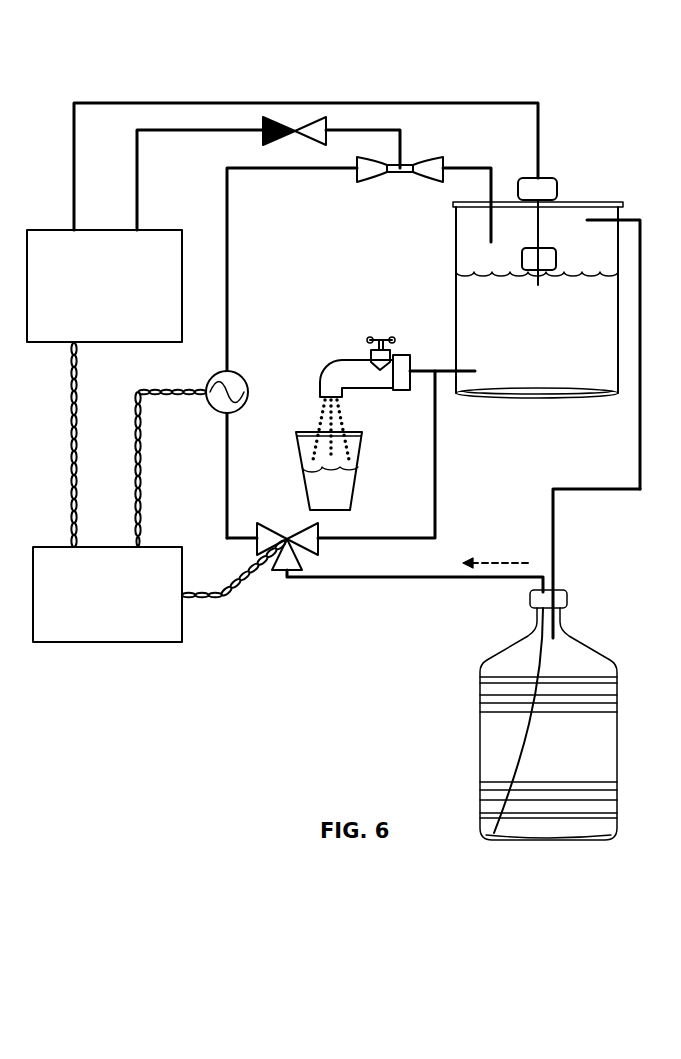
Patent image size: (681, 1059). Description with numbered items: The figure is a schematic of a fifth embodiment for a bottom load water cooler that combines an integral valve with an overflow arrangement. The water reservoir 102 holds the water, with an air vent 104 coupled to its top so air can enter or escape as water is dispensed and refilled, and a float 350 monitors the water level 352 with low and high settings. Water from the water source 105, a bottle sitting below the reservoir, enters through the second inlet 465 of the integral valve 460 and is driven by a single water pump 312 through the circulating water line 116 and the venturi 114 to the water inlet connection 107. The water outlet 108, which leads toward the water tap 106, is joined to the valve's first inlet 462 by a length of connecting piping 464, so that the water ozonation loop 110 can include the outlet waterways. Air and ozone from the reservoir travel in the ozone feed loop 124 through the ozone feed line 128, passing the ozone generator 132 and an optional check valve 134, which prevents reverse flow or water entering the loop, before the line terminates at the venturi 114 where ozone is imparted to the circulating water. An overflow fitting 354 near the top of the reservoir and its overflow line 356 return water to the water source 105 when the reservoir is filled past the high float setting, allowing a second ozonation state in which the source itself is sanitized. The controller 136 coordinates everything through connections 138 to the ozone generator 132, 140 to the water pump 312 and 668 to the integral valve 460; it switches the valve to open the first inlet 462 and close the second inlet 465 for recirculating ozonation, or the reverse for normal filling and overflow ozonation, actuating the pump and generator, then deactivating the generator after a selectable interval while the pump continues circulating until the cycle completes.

The water reservoir 102 is at (511, 319).
The air vent 104 is at (541, 178).
The water source 105 is at (577, 645).
The water tap 106 is at (356, 367).
The water inlet connection 107 is at (491, 166).
The water outlet 108 is at (447, 369).
The water ozonation loop 110 is at (250, 318).
The venturi 114 is at (425, 181).
The circulating water line 116 is at (255, 170).
The ozone feed loop 124 is at (68, 144).
The ozone feed line 128 is at (275, 166).
The ozone generator 132 is at (90, 343).
The check valve 134 is at (295, 134).
The controller 136 is at (97, 643).
The communicative connection 138 is at (71, 460).
The communicative connection 140 is at (140, 459).
The water pump 312 is at (213, 378).
The float 350 is at (539, 250).
The water level 352 is at (480, 271).
The overflow fitting 354 is at (620, 219).
The overflow line 356 is at (612, 489).
The integral valve 460 is at (393, 545).
The first inlet 462 is at (319, 545).
The connecting piping 464 is at (437, 484).
The second inlet 465 is at (280, 571).
The communicative connection 668 is at (204, 598).